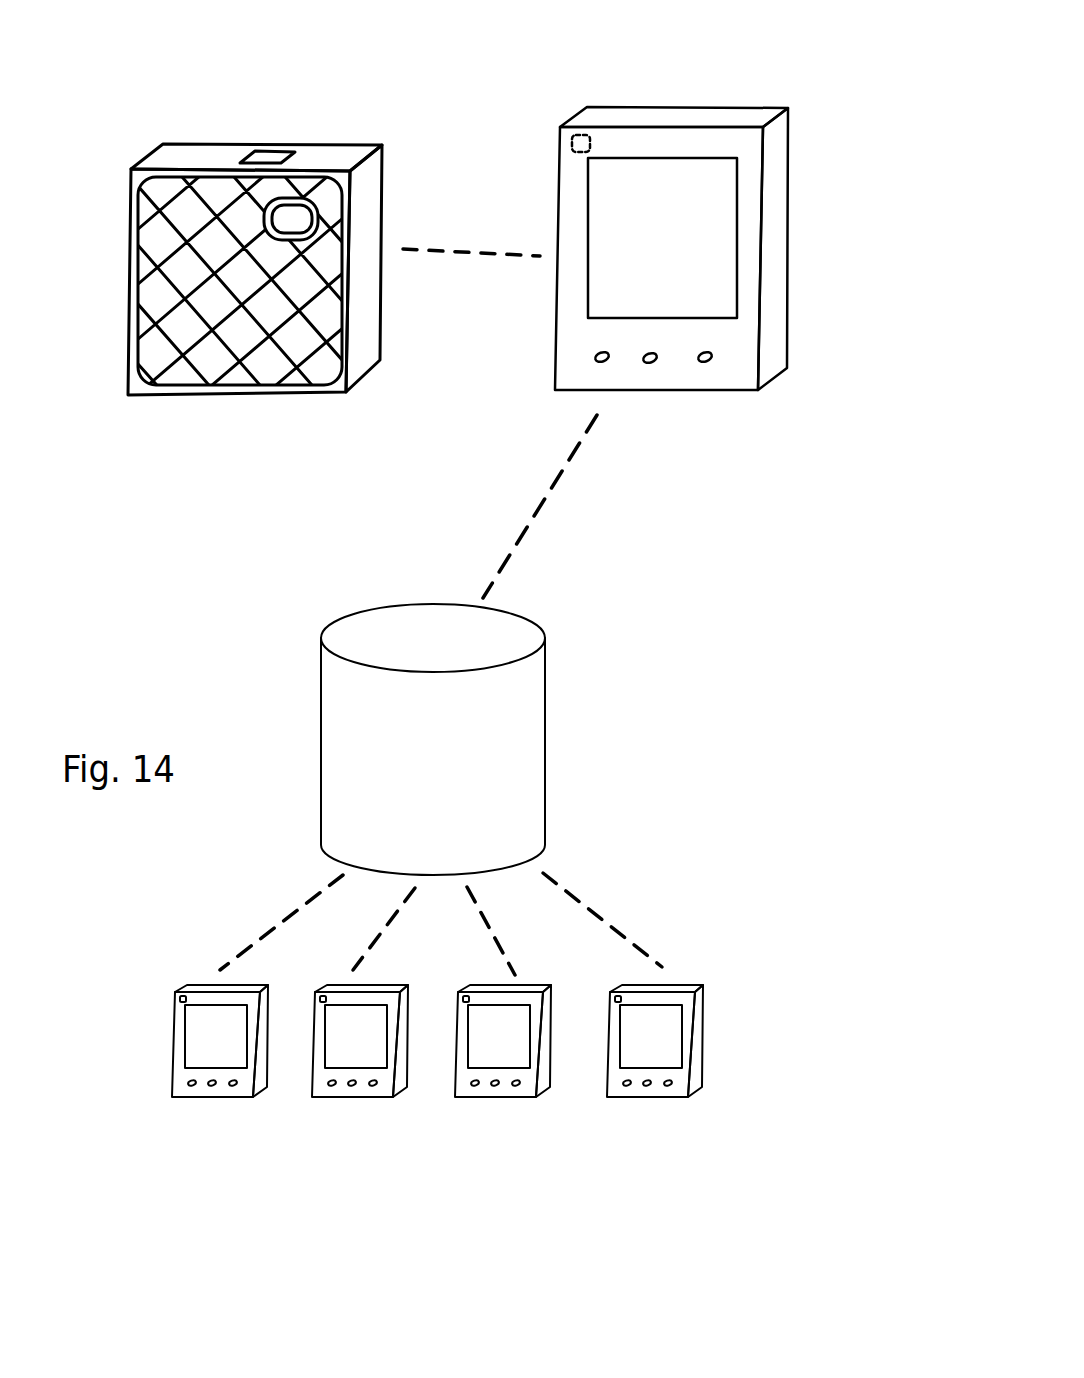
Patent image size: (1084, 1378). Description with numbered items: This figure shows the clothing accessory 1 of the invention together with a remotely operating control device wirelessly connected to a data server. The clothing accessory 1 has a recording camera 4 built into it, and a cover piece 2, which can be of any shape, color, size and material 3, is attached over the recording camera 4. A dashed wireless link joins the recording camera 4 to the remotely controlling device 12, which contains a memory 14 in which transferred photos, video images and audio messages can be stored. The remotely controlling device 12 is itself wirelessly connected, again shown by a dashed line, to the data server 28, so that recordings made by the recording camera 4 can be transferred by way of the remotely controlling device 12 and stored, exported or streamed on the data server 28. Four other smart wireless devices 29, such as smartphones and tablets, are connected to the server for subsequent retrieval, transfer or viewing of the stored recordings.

The clothing accessory 1 is at (214, 257).
The cover piece 2 is at (145, 177).
The material 3 is at (142, 302).
The recording camera 4 is at (200, 157).
The remotely controlling device 12 is at (632, 278).
The memory 14 is at (563, 130).
The data server 28 is at (549, 742).
The smart wireless devices 29 is at (213, 1112).